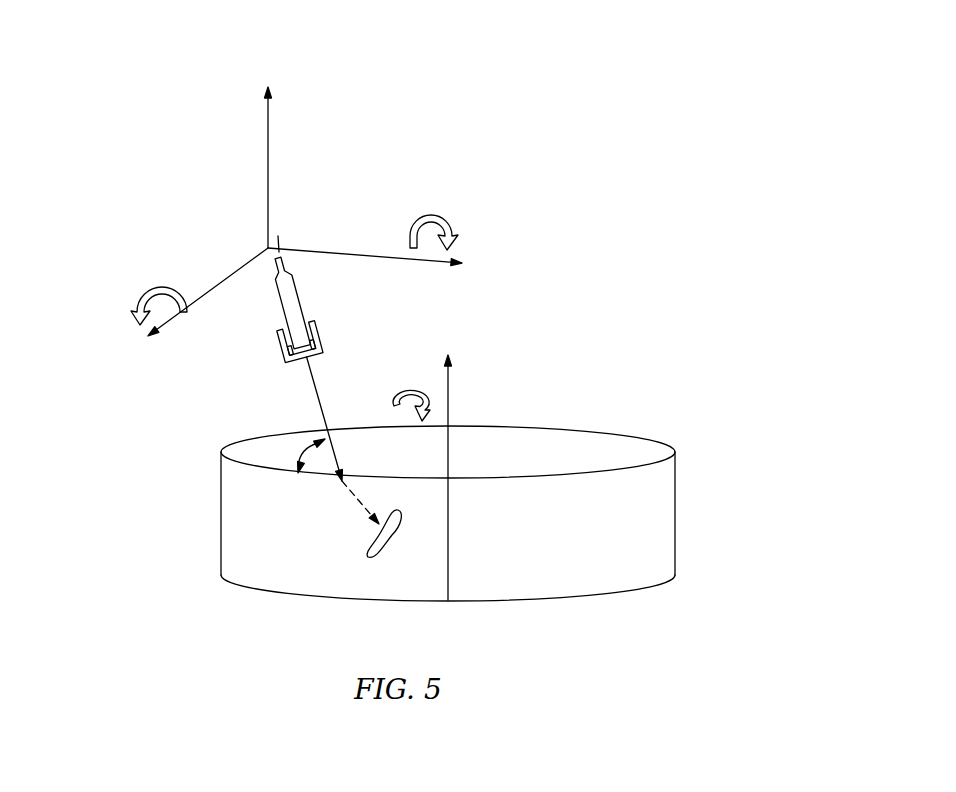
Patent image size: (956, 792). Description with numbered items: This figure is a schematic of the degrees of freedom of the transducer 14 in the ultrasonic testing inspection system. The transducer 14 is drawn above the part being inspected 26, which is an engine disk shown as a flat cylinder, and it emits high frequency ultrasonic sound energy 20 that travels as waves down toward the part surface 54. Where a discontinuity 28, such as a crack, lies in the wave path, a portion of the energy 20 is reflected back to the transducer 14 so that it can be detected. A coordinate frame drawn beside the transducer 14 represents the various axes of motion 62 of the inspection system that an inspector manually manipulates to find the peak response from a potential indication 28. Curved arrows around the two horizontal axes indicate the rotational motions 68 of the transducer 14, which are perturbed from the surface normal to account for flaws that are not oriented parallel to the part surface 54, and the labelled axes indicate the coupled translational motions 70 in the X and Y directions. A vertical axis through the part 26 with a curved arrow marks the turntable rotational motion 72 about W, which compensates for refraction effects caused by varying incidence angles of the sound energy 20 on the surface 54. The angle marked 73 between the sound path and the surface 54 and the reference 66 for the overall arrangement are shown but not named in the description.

The transducer 14 is at (322, 337).
The ultrasonic energy 20 is at (307, 378).
The part being inspected 26 is at (675, 500).
The discontinuity 28 is at (368, 548).
The surface 54 is at (592, 442).
The axes of motion 62 is at (233, 222).
The machine setup 66 is at (609, 97).
The rotational motions 68 is at (417, 210).
The translational motions 70 is at (123, 343).
The turntable rotational motion 72 is at (462, 389).
The tilt angle 73 is at (296, 449).